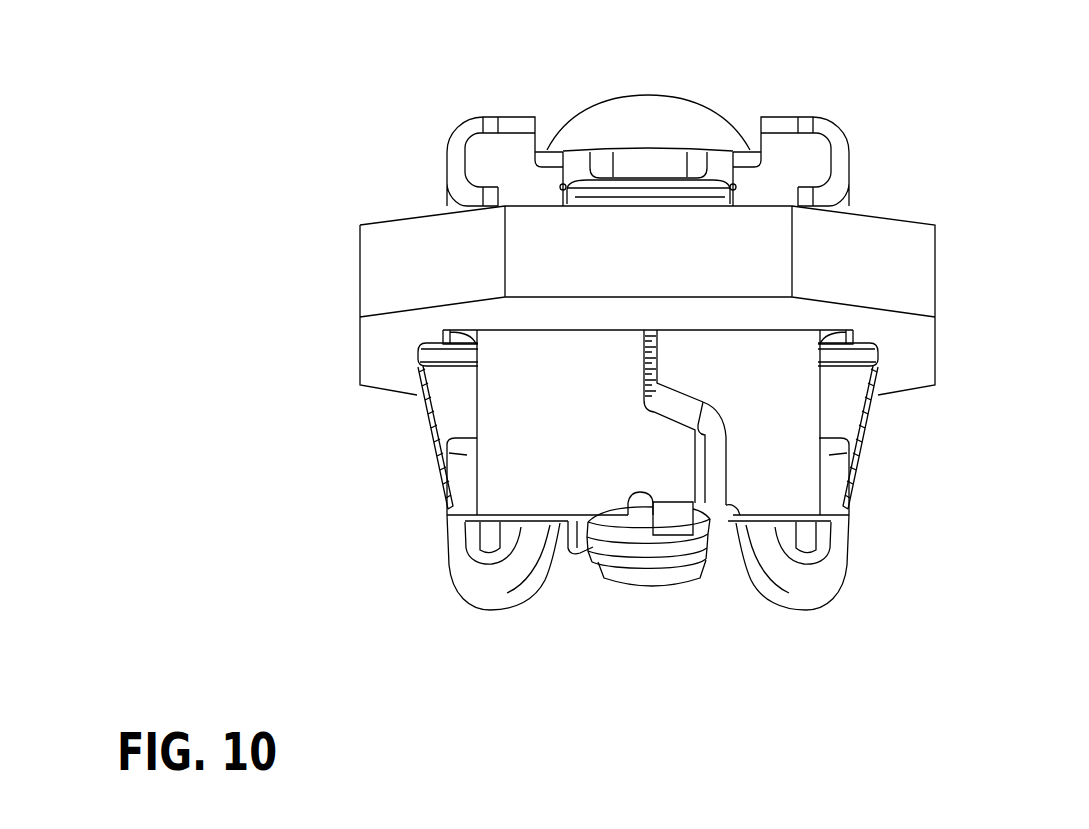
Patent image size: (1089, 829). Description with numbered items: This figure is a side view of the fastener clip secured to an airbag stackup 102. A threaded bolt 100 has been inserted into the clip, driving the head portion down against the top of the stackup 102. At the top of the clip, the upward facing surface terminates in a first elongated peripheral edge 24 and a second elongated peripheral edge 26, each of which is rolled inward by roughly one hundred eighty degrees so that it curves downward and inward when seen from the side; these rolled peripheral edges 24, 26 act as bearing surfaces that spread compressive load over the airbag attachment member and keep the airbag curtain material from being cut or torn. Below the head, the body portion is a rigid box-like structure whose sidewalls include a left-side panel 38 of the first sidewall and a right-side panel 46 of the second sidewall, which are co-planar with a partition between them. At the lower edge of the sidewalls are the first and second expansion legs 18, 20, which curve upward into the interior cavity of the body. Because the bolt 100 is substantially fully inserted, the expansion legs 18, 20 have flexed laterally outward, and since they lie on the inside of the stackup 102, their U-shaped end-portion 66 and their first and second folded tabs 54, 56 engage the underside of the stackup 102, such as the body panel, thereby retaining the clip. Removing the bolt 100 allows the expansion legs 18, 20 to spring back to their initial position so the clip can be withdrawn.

The threaded bolt 100 is at (685, 95).
The stackup 102 is at (938, 272).
The second elongated peripheral edge 26 is at (460, 122).
The first elongated peripheral edge 24 is at (843, 132).
The U-shaped end-portion 66 is at (432, 353).
The second folded tab 56 is at (452, 409).
The first folded tab 54 is at (848, 403).
The right-side panel 46 is at (648, 442).
The left-side panel 38 is at (708, 422).
The second expansion leg 20 is at (491, 596).
The first expansion leg 18 is at (806, 596).